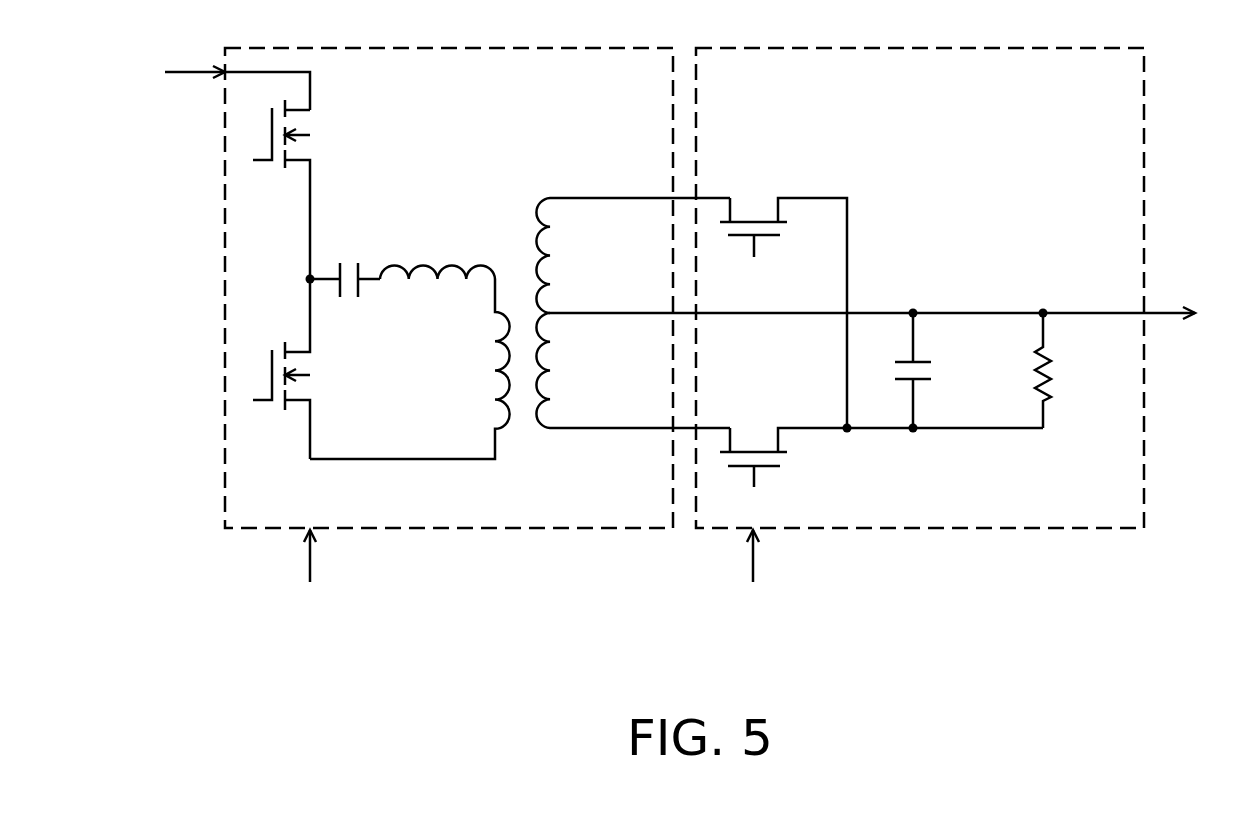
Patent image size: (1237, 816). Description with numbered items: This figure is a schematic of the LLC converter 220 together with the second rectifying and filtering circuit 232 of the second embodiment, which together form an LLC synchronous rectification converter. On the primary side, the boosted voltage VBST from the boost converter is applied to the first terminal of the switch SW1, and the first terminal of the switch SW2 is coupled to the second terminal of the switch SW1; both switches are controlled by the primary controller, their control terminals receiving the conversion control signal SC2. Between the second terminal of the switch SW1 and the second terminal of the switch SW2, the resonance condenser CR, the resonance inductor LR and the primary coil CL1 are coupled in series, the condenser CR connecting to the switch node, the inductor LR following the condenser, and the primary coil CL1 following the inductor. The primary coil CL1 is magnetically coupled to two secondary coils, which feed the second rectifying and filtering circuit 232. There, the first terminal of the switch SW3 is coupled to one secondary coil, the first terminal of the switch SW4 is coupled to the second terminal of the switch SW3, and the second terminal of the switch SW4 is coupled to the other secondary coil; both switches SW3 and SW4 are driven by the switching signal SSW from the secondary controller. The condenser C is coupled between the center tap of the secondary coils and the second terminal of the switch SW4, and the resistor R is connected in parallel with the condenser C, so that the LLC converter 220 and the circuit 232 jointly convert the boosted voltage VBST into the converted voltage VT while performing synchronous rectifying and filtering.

The LLC converter 220 is at (581, 47).
The second rectifying and filtering circuit 232 is at (1074, 47).
The boosted voltage VBST is at (206, 83).
The switch SW1 is at (305, 189).
The switch SW2 is at (308, 369).
The resonance condenser CR is at (345, 262).
The resonance inductor LR is at (437, 253).
The primary coil CL1 is at (410, 369).
The switch SW3 is at (783, 295).
The switch SW4 is at (881, 439).
The condenser C is at (925, 370).
The resistor R is at (1055, 370).
The converted voltage VT is at (890, 315).
The conversion control signal SC2 is at (306, 574).
The switching signal SSW is at (753, 574).